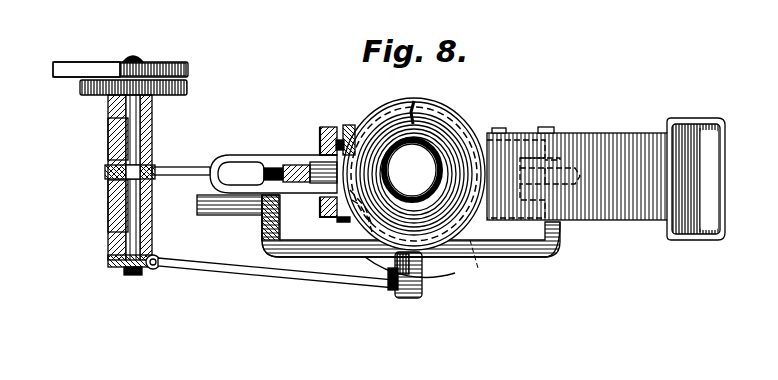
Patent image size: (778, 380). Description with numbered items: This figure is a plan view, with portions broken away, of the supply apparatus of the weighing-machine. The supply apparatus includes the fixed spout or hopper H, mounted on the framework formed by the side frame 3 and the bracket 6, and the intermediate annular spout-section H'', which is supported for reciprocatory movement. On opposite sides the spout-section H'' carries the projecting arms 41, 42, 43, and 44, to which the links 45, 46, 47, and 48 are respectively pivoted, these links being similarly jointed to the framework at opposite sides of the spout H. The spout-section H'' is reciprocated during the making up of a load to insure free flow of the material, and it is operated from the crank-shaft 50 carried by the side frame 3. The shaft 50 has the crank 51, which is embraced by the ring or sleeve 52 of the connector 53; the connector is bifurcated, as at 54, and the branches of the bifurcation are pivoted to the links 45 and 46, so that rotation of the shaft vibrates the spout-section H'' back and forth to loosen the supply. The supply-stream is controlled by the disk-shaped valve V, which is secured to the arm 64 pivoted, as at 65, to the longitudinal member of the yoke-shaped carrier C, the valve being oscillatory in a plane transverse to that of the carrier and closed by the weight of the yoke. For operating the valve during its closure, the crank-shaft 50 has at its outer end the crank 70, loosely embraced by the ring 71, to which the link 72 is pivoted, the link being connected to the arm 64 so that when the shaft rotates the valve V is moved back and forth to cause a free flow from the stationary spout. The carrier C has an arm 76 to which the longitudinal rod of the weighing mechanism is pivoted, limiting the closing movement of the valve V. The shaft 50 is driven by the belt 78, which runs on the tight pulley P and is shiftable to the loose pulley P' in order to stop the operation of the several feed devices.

The tight pulley P is at (120, 57).
The belt 78 is at (70, 72).
The loose pulley P' is at (132, 98).
The crank-shaft 50 is at (146, 130).
The crank 51 is at (150, 163).
The ring or sleeve 52 is at (105, 172).
The connector 53 is at (183, 178).
The side frame 3 is at (108, 207).
The bifurcation 54 is at (243, 155).
The arm of the carrier 76 is at (250, 214).
The ring 71 is at (108, 259).
The crank 70 is at (124, 270).
The link 72 is at (262, 276).
The link 46 is at (324, 140).
The projecting arm 42 is at (346, 125).
The intermediate spout-section H'' is at (382, 157).
The spout-section H is at (414, 170).
The projecting arm 44 is at (496, 140).
The link 48 is at (512, 150).
The bracket 6 is at (604, 135).
The link 45 is at (320, 205).
The projecting arm 41 is at (346, 224).
The link 47 is at (510, 214).
The projecting arm 43 is at (439, 212).
The yoke-shaped carrier C is at (411, 239).
The valve V is at (365, 275).
The pivot 65 is at (422, 282).
The arm 64 is at (410, 298).